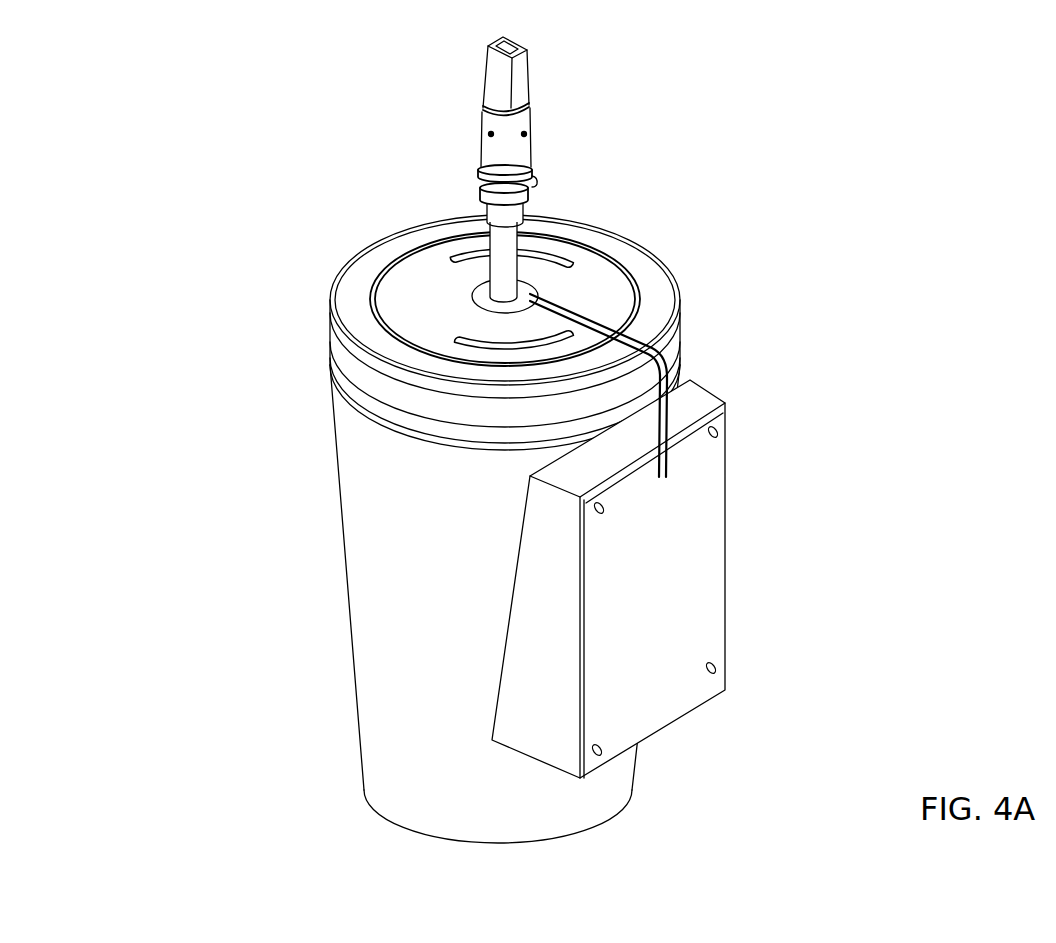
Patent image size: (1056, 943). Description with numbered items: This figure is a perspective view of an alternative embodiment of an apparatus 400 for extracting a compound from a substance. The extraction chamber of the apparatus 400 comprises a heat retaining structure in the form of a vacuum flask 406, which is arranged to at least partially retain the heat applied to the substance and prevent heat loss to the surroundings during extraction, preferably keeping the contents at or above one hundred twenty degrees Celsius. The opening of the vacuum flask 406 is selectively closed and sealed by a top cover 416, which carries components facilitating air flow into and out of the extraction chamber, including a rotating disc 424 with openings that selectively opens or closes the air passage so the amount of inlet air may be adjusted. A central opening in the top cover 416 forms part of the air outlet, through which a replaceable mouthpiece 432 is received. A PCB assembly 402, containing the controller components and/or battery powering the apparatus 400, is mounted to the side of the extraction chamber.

The apparatus 400 is at (962, 114).
The PCB assembly 402 is at (690, 628).
The vacuum flask 406 is at (412, 643).
The top cover 416 is at (475, 390).
The rotating disc 424 is at (415, 293).
The replaceable mouthpiece 432 is at (495, 92).